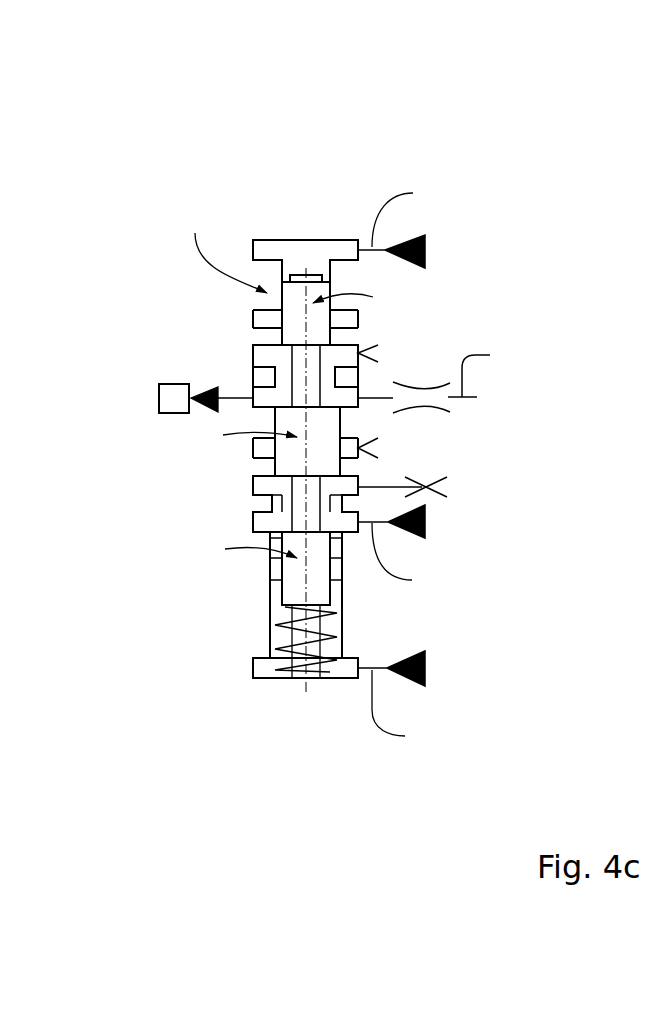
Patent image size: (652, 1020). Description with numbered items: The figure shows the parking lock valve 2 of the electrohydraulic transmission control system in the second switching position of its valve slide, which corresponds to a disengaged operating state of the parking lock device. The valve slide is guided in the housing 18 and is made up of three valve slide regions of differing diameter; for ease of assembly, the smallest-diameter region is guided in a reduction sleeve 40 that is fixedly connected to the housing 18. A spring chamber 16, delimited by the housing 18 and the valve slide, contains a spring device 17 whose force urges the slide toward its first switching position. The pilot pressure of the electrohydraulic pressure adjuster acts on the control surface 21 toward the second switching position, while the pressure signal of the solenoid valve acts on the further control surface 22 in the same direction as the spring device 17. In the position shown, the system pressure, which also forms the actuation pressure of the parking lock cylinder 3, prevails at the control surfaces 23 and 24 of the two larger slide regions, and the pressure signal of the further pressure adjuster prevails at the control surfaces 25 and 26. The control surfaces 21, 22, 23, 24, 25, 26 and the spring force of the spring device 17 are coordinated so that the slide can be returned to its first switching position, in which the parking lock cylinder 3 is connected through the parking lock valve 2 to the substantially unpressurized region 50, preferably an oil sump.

The parking lock valve 2 is at (220, 170).
The parking lock cylinder 3 is at (173, 384).
The spring chamber 16 is at (278, 662).
The spring device 17 is at (295, 680).
The housing 18 is at (343, 240).
The control surface 21 is at (297, 250).
The further control surface 22 is at (288, 607).
The control surface 23 is at (337, 375).
The control surface 24 is at (280, 403).
The control surface 25 is at (282, 478).
The control surface 26 is at (328, 530).
The reduction sleeve 40 is at (272, 570).
The substantially unpressurized region 50 is at (378, 353).